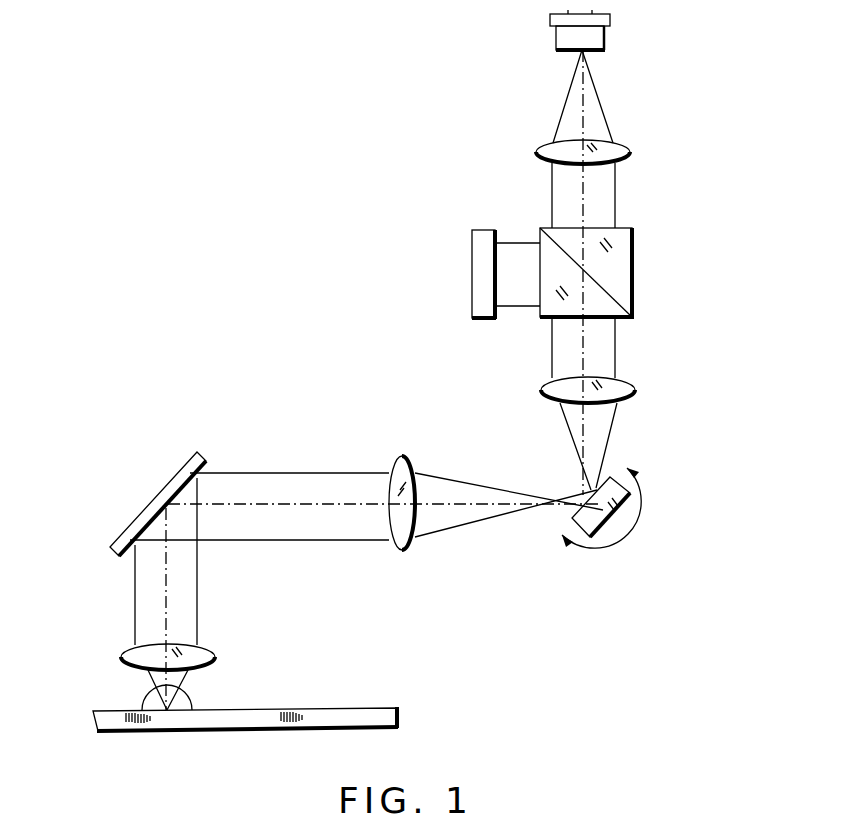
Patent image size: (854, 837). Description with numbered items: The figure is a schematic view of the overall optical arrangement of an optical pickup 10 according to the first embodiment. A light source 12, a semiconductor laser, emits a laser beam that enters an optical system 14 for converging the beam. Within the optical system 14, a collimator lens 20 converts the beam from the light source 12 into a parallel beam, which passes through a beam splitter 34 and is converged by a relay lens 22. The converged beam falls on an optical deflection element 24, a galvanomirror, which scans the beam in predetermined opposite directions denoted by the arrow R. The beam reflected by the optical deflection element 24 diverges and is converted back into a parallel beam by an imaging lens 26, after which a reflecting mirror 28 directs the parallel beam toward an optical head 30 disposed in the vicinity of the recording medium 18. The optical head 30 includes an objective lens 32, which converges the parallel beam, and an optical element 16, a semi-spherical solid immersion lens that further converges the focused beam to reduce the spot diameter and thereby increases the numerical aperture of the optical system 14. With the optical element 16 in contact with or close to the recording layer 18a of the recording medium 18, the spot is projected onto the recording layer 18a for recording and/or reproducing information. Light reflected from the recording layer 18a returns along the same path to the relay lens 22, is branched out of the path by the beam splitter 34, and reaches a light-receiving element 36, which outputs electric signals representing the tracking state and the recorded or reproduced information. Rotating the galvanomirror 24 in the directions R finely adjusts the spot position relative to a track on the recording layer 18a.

The optical pickup 10 is at (283, 268).
The light source 12 is at (604, 38).
The optical system 14 is at (575, 572).
The optical element 16 is at (187, 705).
The recording medium 18 is at (410, 717).
The recording layer 18a is at (357, 711).
The collimator lens 20 is at (601, 150).
The relay lens 22 is at (635, 389).
The optical deflection element 24 is at (572, 518).
The imaging lens 26 is at (404, 552).
The reflecting mirror 28 is at (172, 490).
The optical head 30 is at (104, 636).
The objective lens 32 is at (205, 648).
The beam splitter 34 is at (545, 320).
The light-receiving element 36 is at (484, 273).
The opposite directions R is at (604, 515).